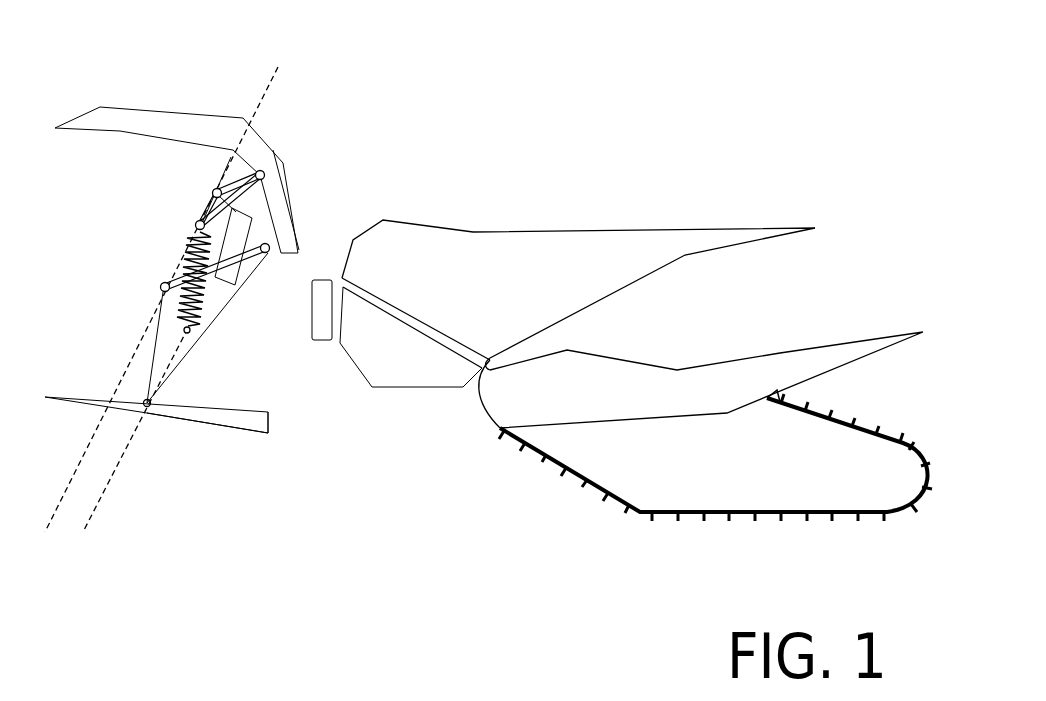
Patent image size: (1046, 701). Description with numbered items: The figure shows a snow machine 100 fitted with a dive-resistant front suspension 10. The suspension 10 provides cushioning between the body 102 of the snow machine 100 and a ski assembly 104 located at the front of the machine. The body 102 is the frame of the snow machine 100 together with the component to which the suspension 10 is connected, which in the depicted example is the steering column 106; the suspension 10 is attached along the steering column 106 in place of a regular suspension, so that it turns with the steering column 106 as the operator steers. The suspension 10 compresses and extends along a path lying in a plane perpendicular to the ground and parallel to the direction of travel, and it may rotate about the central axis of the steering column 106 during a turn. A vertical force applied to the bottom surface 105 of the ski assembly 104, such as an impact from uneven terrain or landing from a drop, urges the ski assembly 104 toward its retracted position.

The suspension 10 is at (153, 230).
The snow machine 100 is at (528, 158).
The body 102 is at (383, 227).
The ski assembly 104 is at (78, 407).
The bottom surface 105 is at (187, 413).
The steering column 106 is at (223, 178).